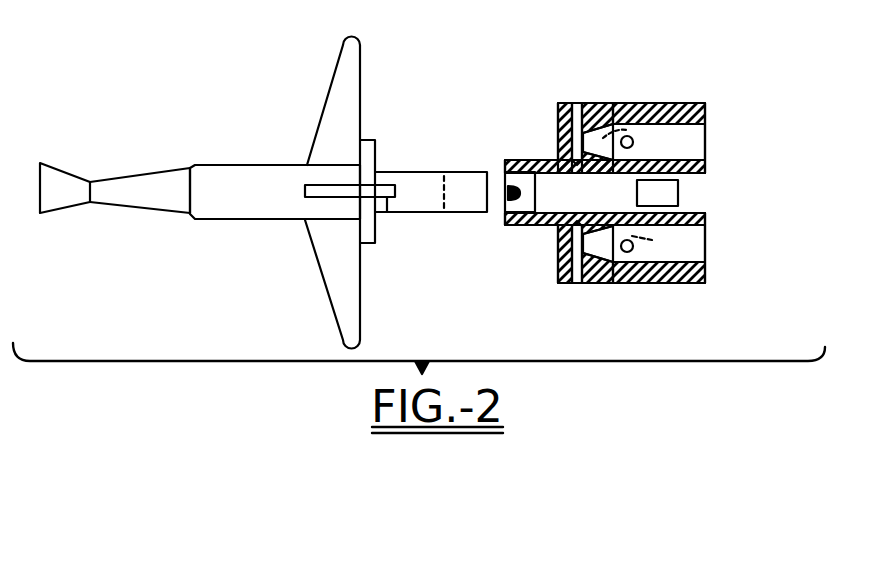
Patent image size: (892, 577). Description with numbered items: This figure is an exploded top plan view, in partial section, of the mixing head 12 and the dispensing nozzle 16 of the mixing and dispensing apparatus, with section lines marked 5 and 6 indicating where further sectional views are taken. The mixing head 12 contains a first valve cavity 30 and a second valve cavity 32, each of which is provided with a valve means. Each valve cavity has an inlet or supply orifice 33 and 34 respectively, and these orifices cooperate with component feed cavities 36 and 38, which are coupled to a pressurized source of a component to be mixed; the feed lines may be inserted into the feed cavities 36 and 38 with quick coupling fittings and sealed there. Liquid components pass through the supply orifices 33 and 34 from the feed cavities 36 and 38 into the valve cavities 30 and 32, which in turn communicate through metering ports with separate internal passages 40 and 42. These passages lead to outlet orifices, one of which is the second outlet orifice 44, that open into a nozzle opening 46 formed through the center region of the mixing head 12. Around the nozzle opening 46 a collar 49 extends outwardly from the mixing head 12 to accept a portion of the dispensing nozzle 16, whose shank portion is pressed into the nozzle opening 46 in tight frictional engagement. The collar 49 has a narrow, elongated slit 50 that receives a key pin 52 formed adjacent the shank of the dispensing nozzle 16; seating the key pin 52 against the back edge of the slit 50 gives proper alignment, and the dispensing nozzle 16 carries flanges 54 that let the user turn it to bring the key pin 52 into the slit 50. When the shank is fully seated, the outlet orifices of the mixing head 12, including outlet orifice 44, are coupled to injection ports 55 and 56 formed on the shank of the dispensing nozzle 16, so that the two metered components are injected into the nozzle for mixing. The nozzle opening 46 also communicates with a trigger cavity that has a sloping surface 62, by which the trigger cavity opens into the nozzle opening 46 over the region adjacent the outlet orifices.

The mixing head 12 is at (651, 97).
The dispensing nozzle 16 is at (241, 158).
The first valve cavity 30 is at (663, 135).
The second valve cavity 32 is at (672, 258).
The inlet or supply orifice 33 is at (628, 136).
The inlet or supply orifice 34 is at (628, 255).
The component feed cavity 36 is at (622, 181).
The component feed cavity 38 is at (655, 242).
The internal passage 40 is at (577, 105).
The internal passage 42 is at (576, 283).
The second outlet orifice 44 is at (575, 208).
The nozzle opening 46 is at (700, 183).
The collar 49 is at (503, 226).
The slit 50 is at (508, 222).
The key pin 52 is at (387, 200).
The flanges 54 is at (306, 236).
The injection port 55 is at (443, 175).
The injection port 56 is at (444, 213).
The sloping surface 62 is at (680, 194).
The section line 5- 5 is at (530, 150).
The section line 6- 6 is at (493, 200).